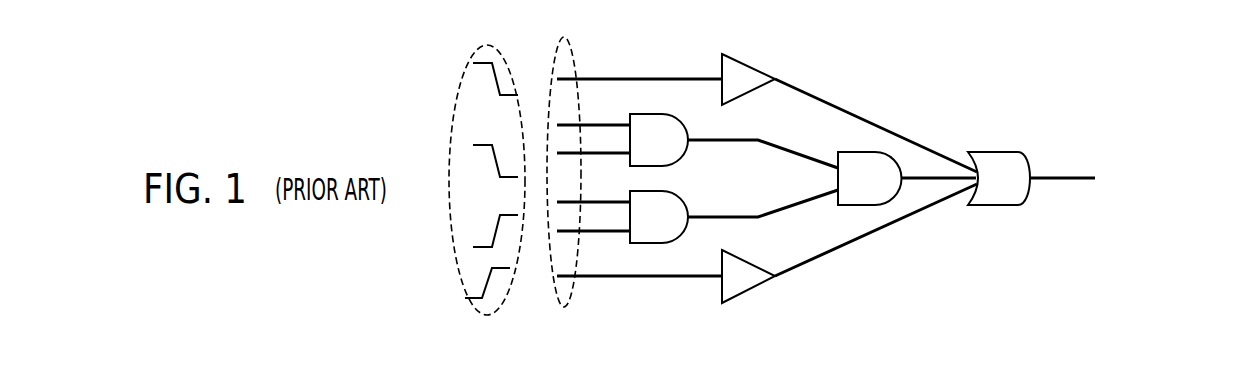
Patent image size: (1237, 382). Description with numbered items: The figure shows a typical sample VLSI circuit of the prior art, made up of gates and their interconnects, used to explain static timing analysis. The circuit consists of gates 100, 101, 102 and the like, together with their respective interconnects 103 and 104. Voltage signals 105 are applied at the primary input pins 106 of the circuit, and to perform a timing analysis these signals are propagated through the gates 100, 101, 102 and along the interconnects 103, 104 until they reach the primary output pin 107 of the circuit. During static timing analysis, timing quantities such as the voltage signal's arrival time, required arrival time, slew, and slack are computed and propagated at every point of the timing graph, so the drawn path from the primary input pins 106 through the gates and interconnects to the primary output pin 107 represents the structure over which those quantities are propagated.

The gate 100 is at (1018, 152).
The gate 101 is at (752, 72).
The gate 102 is at (752, 286).
The interconnect 103 is at (882, 230).
The interconnect 104 is at (882, 127).
The voltage signals 105 is at (487, 316).
The primary input pins 106 is at (564, 308).
The primary output pin 107 is at (1080, 178).